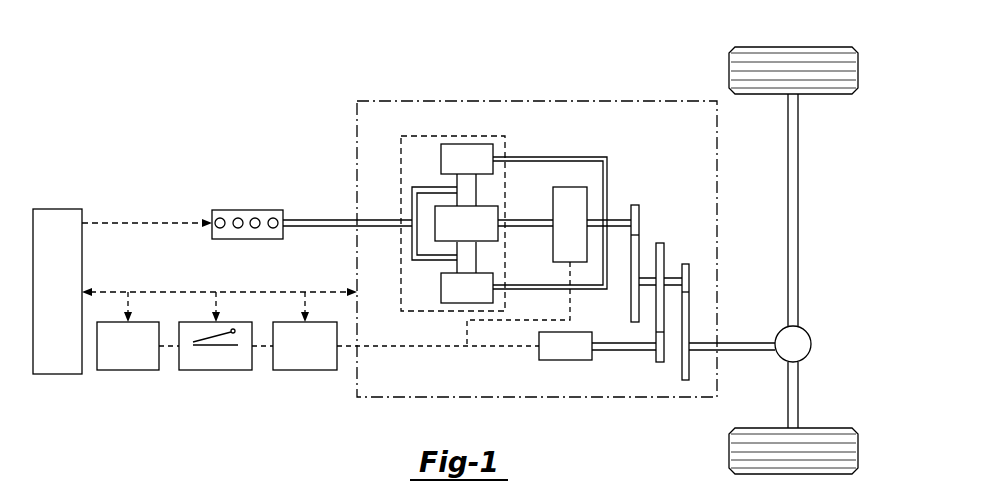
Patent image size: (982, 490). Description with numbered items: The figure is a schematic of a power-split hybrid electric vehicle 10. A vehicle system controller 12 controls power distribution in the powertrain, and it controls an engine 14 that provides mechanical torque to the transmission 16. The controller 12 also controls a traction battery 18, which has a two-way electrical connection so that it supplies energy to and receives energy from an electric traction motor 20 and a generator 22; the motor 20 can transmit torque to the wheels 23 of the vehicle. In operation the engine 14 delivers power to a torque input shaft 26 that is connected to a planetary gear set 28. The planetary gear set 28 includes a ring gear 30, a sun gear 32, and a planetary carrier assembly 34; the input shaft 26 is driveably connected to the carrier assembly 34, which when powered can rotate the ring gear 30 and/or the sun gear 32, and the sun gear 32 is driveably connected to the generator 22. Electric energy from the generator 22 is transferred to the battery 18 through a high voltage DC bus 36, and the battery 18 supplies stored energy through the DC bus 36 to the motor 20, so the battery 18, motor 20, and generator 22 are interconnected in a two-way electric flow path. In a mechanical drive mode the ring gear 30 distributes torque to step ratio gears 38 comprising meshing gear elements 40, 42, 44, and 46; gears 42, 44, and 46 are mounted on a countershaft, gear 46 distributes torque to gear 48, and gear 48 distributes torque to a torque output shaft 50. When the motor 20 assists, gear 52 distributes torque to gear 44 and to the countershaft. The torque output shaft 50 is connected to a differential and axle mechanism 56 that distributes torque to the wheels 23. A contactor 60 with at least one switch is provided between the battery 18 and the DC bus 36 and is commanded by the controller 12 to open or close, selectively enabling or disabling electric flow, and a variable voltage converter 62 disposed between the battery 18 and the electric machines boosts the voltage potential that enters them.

The vehicle 10 is at (277, 74).
The vehicle system controller 12 is at (58, 374).
The engine 14 is at (212, 210).
The transmission 16 is at (630, 100).
The battery 18 is at (128, 370).
The motor 20 is at (565, 360).
The generator 22 is at (587, 194).
The wheels 23 is at (793, 47).
The torque input shaft 26 is at (312, 220).
The planetary gear set 28 is at (505, 137).
The ring gear 30 is at (441, 158).
The sun gear 32 is at (490, 241).
The planetary carrier assembly 34 is at (412, 207).
The high voltage DC bus 36 is at (386, 346).
The step ratio gears 38 is at (708, 215).
The gear element 40 is at (639, 218).
The gear element 42 is at (631, 308).
The gear element 44 is at (664, 250).
The gear element 46 is at (689, 282).
The gear 48 is at (689, 318).
The torque output shaft 50 is at (742, 350).
The gear 52 is at (658, 362).
The differential and axle mechanism 56 is at (811, 344).
The contactor 60 is at (216, 370).
The variable voltage converter 62 is at (305, 370).